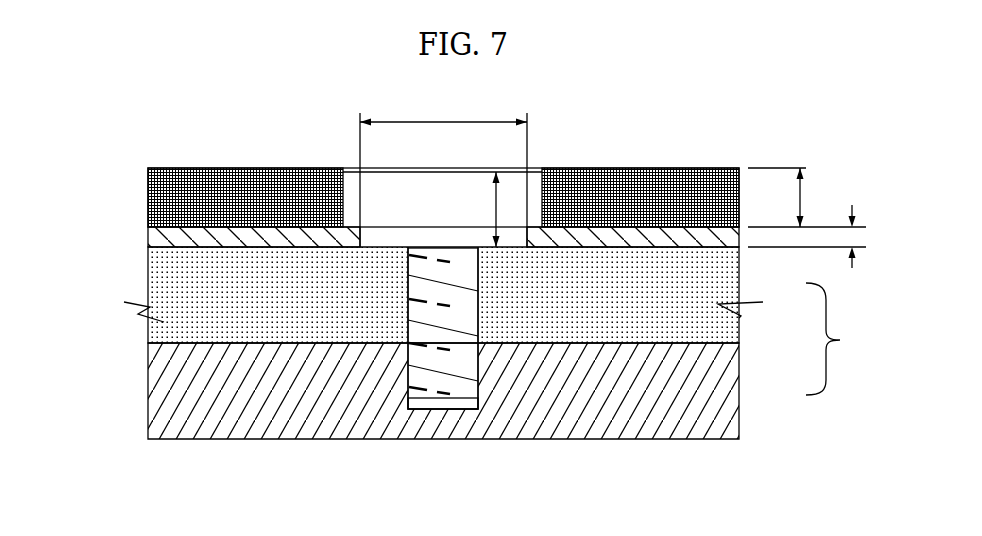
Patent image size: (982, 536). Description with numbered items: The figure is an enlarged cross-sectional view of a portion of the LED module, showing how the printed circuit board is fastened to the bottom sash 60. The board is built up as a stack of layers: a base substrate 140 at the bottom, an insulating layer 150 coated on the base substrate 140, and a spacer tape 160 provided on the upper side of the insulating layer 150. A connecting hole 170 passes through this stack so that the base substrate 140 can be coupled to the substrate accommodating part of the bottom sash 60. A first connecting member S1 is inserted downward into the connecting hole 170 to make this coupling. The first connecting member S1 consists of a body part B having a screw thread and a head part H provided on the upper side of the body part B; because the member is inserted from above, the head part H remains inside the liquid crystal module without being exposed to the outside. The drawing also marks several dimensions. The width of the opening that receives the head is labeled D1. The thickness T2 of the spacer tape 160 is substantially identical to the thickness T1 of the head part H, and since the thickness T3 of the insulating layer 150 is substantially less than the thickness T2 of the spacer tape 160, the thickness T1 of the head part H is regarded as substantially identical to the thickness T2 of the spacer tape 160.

The bottom sash 60 is at (162, 396).
The base substrate 140 is at (163, 332).
The insulating layer 150 is at (160, 243).
The spacer tape 160 is at (163, 197).
The connecting hole 170 is at (440, 404).
The head part H is at (530, 205).
The body part B is at (467, 363).
The first connecting member S1 is at (838, 339).
The opening width D1 is at (443, 109).
The thickness of the head part T1 is at (480, 209).
The thickness of the spacer tape T2 is at (807, 197).
The thickness of the insulating layer T3 is at (818, 236).